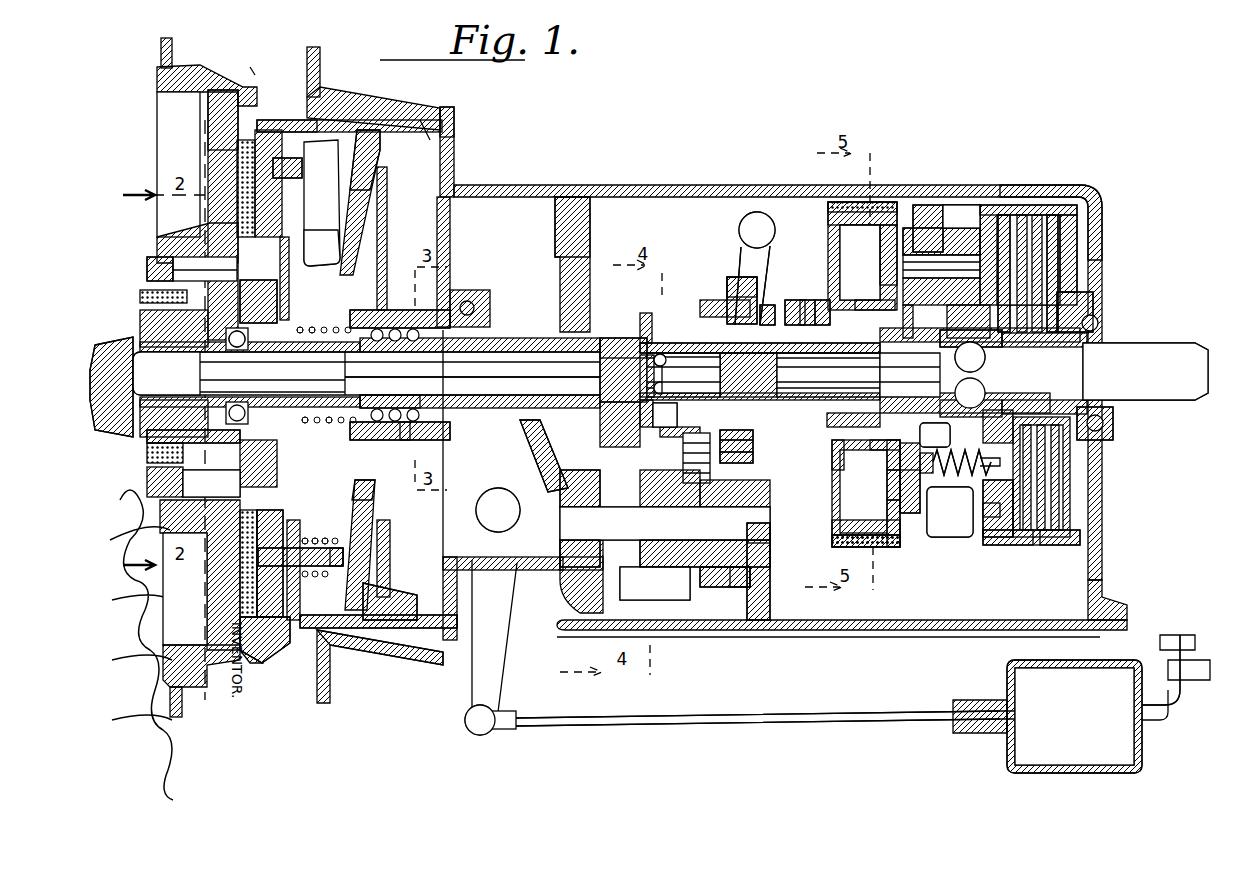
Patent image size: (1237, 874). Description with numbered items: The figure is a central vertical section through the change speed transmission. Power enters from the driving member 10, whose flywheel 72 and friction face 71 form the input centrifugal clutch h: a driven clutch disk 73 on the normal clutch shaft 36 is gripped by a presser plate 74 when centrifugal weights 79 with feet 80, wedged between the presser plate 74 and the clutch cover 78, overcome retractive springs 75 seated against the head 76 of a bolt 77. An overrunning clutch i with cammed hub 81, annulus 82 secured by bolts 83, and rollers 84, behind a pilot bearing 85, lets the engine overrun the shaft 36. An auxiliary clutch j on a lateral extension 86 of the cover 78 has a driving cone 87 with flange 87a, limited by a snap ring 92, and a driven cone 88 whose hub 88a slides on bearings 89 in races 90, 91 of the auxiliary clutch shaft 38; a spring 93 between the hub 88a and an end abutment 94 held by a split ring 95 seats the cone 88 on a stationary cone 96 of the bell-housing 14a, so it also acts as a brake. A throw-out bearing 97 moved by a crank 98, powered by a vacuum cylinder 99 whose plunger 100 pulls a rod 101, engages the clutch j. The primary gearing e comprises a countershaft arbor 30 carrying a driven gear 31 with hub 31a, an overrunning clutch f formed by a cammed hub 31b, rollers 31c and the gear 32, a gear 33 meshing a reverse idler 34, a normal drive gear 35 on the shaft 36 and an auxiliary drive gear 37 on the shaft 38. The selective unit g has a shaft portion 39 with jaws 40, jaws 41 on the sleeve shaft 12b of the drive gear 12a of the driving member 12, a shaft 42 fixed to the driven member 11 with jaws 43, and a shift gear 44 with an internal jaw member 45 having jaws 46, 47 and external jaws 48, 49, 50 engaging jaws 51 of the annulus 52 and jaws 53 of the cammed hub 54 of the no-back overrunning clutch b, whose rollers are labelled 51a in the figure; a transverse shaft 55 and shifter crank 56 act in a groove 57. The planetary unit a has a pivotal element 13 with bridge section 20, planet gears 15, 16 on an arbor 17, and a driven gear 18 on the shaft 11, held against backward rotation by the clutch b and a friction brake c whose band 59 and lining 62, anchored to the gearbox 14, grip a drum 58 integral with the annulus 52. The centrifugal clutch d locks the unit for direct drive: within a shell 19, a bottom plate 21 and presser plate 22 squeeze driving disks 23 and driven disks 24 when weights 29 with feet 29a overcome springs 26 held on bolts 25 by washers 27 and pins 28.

The driving member 10 is at (125, 340).
The driven member 11 is at (1178, 347).
The driving member 12 is at (898, 353).
The drive gear portion 12a is at (915, 433).
The sleeve shaft portion 12b is at (850, 353).
The pivotal element 13 is at (988, 207).
The gearbox 14 is at (1070, 182).
The clutch bell-housing 14a is at (445, 105).
The planet gear 15 is at (932, 205).
The planet gear 16 is at (967, 215).
The arbor 17 is at (917, 258).
The driven gear 18 is at (940, 465).
The shell 19 is at (1027, 537).
The bridge section 20 is at (925, 503).
The bottom friction plate 21 is at (1063, 267).
The presser plate 22 is at (1005, 215).
The driving disks 23 is at (1042, 530).
The driven disks 24 is at (1060, 300).
The bolts 25 is at (1073, 470).
The springs 26 is at (925, 490).
The washers 27 is at (925, 478).
The pins 28 is at (922, 462).
The centrifugal weights 29 is at (950, 512).
The feet portion 29a is at (973, 557).
The countershaft arbor 30 is at (665, 523).
The driven gear 31 is at (617, 617).
The hub portion 31a is at (640, 495).
The cammed hub 31b is at (692, 575).
The roller clutch members 31c is at (653, 612).
The gear 32 is at (668, 587).
The gear 33 is at (733, 570).
The reverse idler gear 34 is at (725, 567).
The normal drive gear 35 is at (625, 338).
The normal clutch shaft 36 is at (472, 366).
The auxiliary drive gear 37 is at (590, 262).
The auxiliary clutch shaft 38 is at (483, 300).
The shaft portion 39 is at (677, 413).
The clutch jaws 40 is at (691, 375).
The clutch jaws 41 is at (762, 300).
The forwardly extending shaft 42 is at (1000, 372).
The clutch jaws 43 is at (775, 462).
The shiftable gear 44 is at (743, 287).
The internal jaw clutch member 45 is at (768, 312).
The first series of internal clutch jaws 46 is at (667, 355).
The second series of internal clutch jaws 47 is at (770, 447).
The first series of clutch jaws 48 is at (792, 300).
The second series of clutch jaws 49 is at (828, 303).
The third series of clutch jaws 50 is at (800, 322).
The clutch jaws 51 is at (838, 472).
The clutch member 51a is at (870, 320).
The annulus 52 is at (890, 287).
The clutch jaws 53 is at (790, 482).
The cammed hub 54 is at (940, 380).
The transverse shaft 55 is at (773, 224).
The shifter crank 56 is at (770, 252).
The groove 57 is at (770, 420).
The brake drum 58 is at (840, 527).
The brake band 59 is at (883, 547).
The brake lining 62 is at (838, 538).
The bottom friction face 71 is at (282, 625).
The engine flywheel 72 is at (255, 662).
The driven clutch disk 73 is at (237, 175).
The presser plate 74 is at (283, 587).
The retractive springs 75 is at (320, 537).
The head 76 is at (343, 556).
The bolt 77 is at (334, 570).
The clutch cover 78 is at (283, 120).
The centrifugal weights 79 is at (320, 247).
The feet portions 80 is at (302, 167).
The cammed hub 81 is at (225, 440).
The annulus 82 is at (272, 296).
The bolts 83 is at (222, 478).
The clutch rollers 84 is at (168, 420).
The pilot bearing 85 is at (238, 333).
The lateral extension 86 is at (355, 628).
The driving clutch cone 87 is at (378, 652).
The internal flange portion 87a is at (340, 480).
The driven clutch cone 88 is at (395, 585).
The hub portion 88a is at (418, 466).
The anti-friction bearing instrumentalities 89 is at (352, 440).
The longitudinal race 90 is at (405, 313).
The longitudinal race 91 is at (363, 413).
The snap ring 92 is at (452, 618).
The retractive spring 93 is at (329, 426).
The end abutment 94 is at (300, 326).
The split ring 95 is at (308, 425).
The stationary mate cone 96 is at (400, 175).
The throw-out bearing 97 is at (468, 292).
The crank 98 is at (512, 481).
The vacuum cylinder 99 is at (1097, 762).
The plunger 100 is at (1058, 670).
The rod 101 is at (790, 716).
The planetary gear unit a is at (948, 230).
The overrunning clutch b is at (867, 297).
The friction brake c is at (882, 203).
The centrifugal automatic clutch d is at (1032, 200).
The primary speed reducing gearing e is at (630, 265).
The overrunning clutch f is at (600, 568).
The selective unit g is at (727, 275).
The input centrifugal automatic clutch h is at (262, 118).
The overrunning clutch unit i is at (147, 265).
The auxiliary input clutch unit j is at (427, 140).